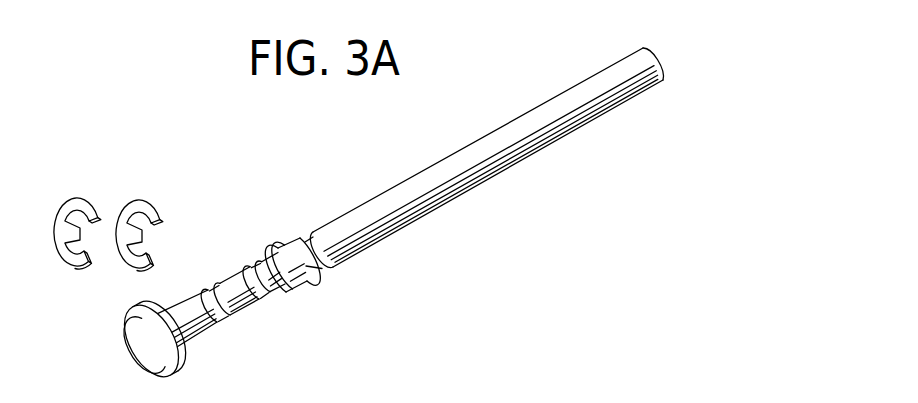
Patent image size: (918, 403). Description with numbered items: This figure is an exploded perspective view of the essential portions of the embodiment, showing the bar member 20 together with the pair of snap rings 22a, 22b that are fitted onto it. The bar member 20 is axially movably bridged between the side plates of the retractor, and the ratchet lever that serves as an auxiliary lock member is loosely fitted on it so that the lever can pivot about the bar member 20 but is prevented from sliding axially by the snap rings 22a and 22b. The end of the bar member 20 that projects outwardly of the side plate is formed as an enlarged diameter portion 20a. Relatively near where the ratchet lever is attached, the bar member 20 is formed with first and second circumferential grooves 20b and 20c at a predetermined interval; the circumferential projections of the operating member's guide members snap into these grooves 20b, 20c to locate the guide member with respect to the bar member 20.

The bar member 20 is at (467, 172).
The enlarged diameter portion 20a is at (172, 363).
The first circumferential groove 20b is at (328, 265).
The second circumferential groove 20c is at (288, 280).
The snap ring 22a is at (80, 254).
The snap ring 22b is at (147, 220).